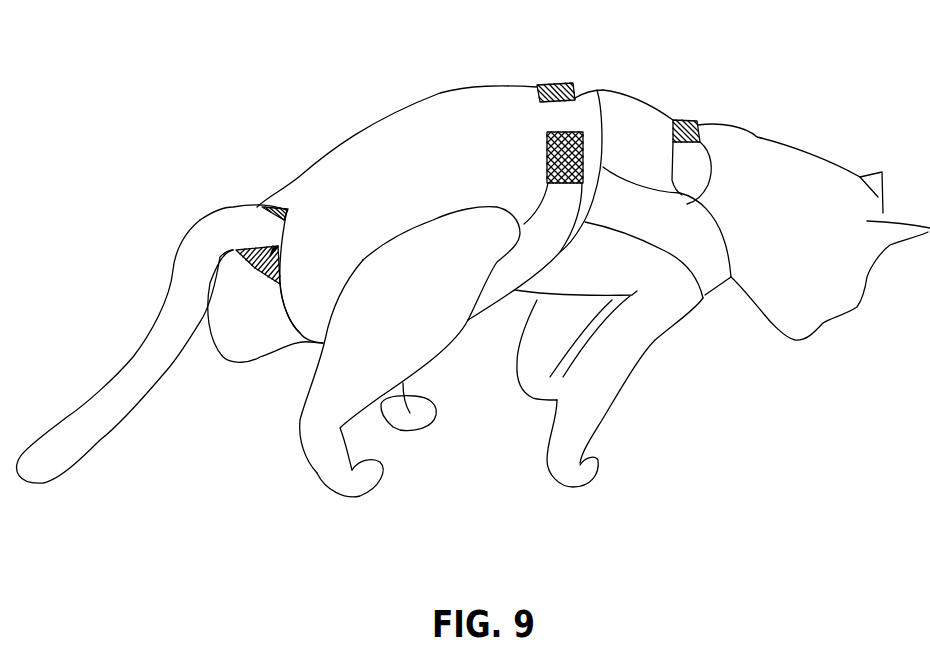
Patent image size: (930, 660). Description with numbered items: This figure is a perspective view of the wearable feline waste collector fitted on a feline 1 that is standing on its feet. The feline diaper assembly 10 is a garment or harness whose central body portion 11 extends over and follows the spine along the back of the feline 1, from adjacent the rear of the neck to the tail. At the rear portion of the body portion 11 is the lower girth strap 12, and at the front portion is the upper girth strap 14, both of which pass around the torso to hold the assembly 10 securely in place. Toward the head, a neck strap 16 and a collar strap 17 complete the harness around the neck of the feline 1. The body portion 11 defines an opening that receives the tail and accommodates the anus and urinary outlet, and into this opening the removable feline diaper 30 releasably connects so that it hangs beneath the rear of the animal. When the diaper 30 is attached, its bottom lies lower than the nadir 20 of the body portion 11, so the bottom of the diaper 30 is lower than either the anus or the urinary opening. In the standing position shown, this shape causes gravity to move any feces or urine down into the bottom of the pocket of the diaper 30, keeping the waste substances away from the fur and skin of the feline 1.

The feline 1 is at (811, 99).
The feline diaper assembly 10 is at (469, 193).
The central body portion 11 is at (412, 168).
The left lower girth strap 12 is at (326, 290).
The left upper girth strap 14 is at (561, 249).
The neck strap 16 is at (673, 229).
The collar strap 17 is at (704, 178).
The nadir of the body portion 20 is at (270, 255).
The feline diaper 30 is at (267, 331).